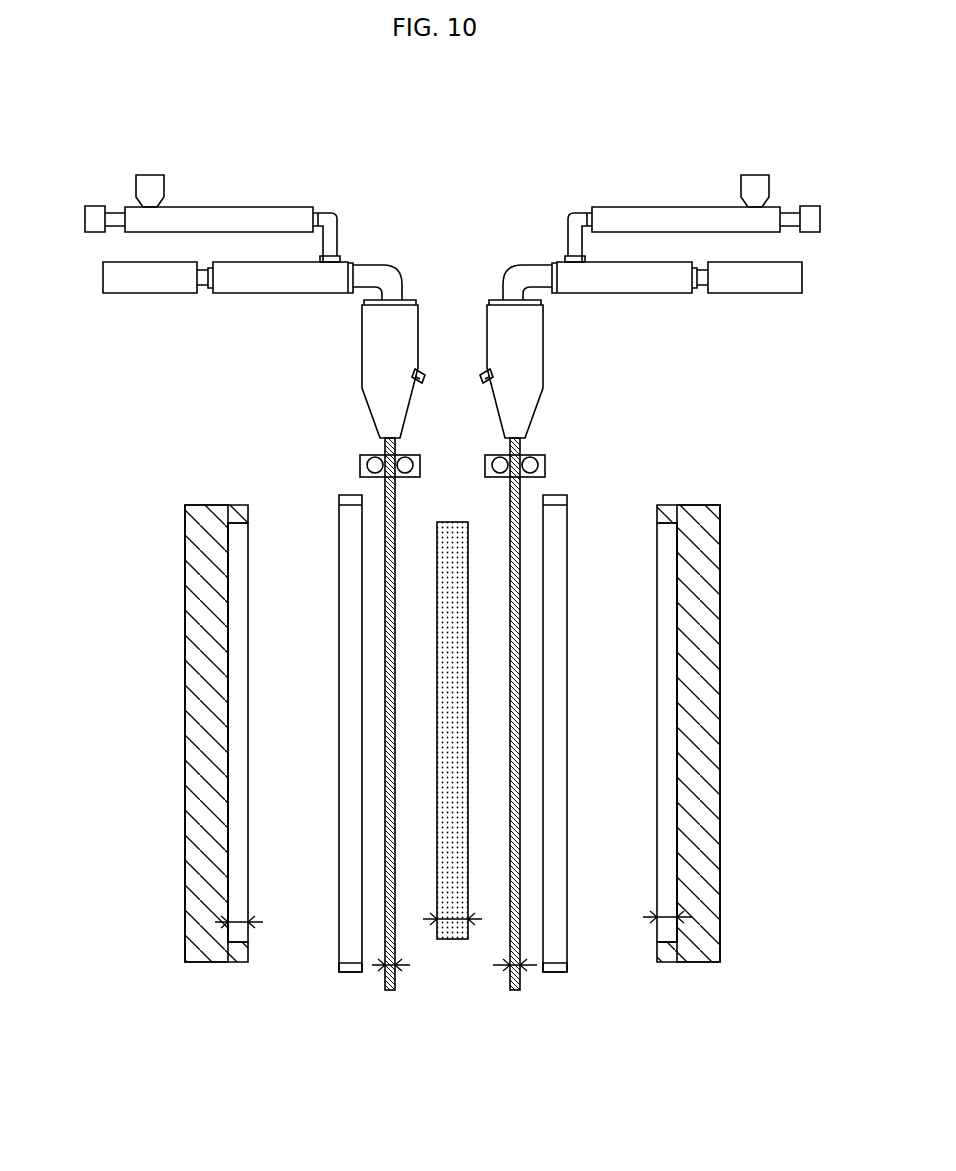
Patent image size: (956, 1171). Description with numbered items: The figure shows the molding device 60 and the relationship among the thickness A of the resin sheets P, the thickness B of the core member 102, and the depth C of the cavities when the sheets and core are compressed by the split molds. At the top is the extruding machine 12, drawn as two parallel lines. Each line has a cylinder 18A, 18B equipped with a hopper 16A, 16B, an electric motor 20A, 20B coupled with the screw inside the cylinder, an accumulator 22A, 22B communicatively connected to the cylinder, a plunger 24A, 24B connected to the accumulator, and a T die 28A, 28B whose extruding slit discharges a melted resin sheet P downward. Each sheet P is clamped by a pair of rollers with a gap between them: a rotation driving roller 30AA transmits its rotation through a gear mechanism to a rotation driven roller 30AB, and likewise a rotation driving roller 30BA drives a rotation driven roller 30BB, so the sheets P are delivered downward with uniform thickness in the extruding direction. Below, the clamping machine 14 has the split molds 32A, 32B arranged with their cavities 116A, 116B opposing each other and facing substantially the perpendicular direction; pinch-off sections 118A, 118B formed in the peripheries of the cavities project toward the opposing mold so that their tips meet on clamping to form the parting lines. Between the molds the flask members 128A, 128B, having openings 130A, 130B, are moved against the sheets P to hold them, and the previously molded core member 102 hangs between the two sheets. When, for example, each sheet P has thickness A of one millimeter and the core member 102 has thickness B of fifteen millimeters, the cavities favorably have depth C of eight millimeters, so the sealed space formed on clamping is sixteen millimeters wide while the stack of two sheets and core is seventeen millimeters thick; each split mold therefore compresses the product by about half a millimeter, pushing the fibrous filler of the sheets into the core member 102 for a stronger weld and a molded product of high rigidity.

The extruding machine 12 is at (87, 285).
The clamping machine 14 is at (133, 810).
The hopper 16A is at (148, 183).
The hopper 16B is at (753, 183).
The cylinder 18A is at (247, 217).
The cylinder 18B is at (672, 217).
The electric motor 20A is at (94, 212).
The electric motor 20B is at (812, 212).
The accumulator 22A is at (286, 283).
The accumulator 22B is at (661, 283).
The plunger 24A is at (163, 283).
The plunger 24B is at (769, 283).
The T die 28A is at (365, 372).
The T die 28B is at (540, 372).
The rotation driving roller 30AA is at (375, 458).
The rotation driven roller 30AB is at (405, 470).
The rotation driving roller 30BA is at (530, 460).
The rotation driven roller 30BB is at (500, 460).
The split mold 32A is at (187, 560).
The split mold 32B is at (712, 572).
The molding device 60 is at (277, 1048).
The core member 102 is at (455, 780).
The cavity 116A is at (225, 707).
The cavity 116B is at (677, 718).
The pinch-off section 118A is at (243, 515).
The pinch-off section 118B is at (657, 515).
The flask member 128A is at (350, 968).
The flask member 128B is at (557, 968).
The opening 130A is at (342, 657).
The opening 130B is at (564, 657).
The thickness of resin sheet A is at (380, 962).
The thickness of core member B is at (455, 925).
The depth of cavity C is at (240, 920).
The resin sheet P is at (395, 975).